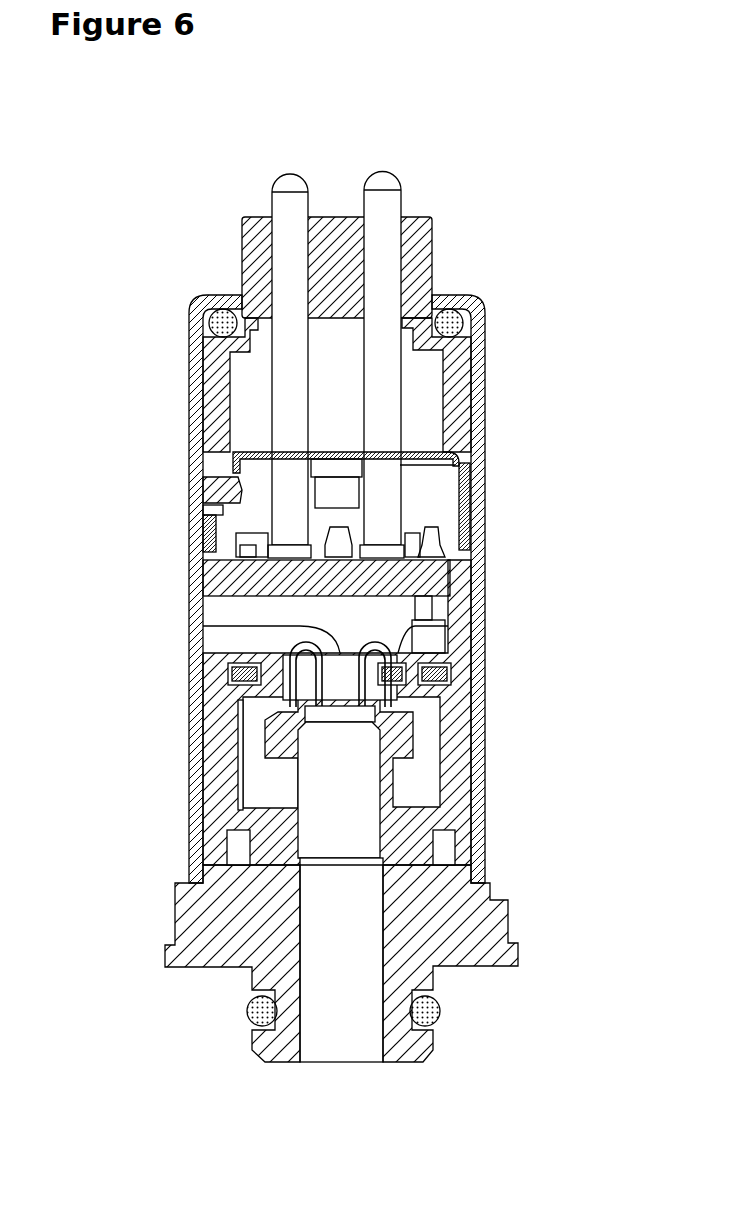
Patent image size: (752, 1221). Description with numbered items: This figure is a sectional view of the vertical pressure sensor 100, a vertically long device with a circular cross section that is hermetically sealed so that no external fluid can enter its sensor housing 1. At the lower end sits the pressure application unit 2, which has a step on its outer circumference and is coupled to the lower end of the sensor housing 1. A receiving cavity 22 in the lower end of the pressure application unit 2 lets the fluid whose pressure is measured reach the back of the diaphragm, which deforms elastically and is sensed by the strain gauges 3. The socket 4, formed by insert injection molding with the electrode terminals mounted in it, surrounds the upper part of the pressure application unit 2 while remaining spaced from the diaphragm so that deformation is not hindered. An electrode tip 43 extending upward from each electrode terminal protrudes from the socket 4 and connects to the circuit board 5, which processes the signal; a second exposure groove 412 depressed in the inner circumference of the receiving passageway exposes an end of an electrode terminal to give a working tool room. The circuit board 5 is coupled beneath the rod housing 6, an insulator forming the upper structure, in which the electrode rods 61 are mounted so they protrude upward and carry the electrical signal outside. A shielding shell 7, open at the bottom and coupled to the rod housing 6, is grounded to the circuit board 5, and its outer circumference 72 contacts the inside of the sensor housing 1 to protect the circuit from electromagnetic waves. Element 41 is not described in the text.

The vertical pressure sensor 100 is at (616, 107).
The sensor housing 1 is at (478, 360).
The pressure application unit 2 is at (192, 922).
The strain gauges 3 is at (362, 707).
The socket 4 is at (458, 770).
The circuit board 5 is at (206, 573).
The rod housing 6 is at (417, 227).
The shielding shell 7 is at (205, 512).
The receiving cavity 22 is at (318, 838).
The support plate 41 is at (232, 627).
The electrode tip 43 is at (440, 527).
The electrode rod 61 is at (284, 182).
The outer circumference of the shielding shell 72 is at (470, 535).
The second exposure groove 412 is at (478, 624).